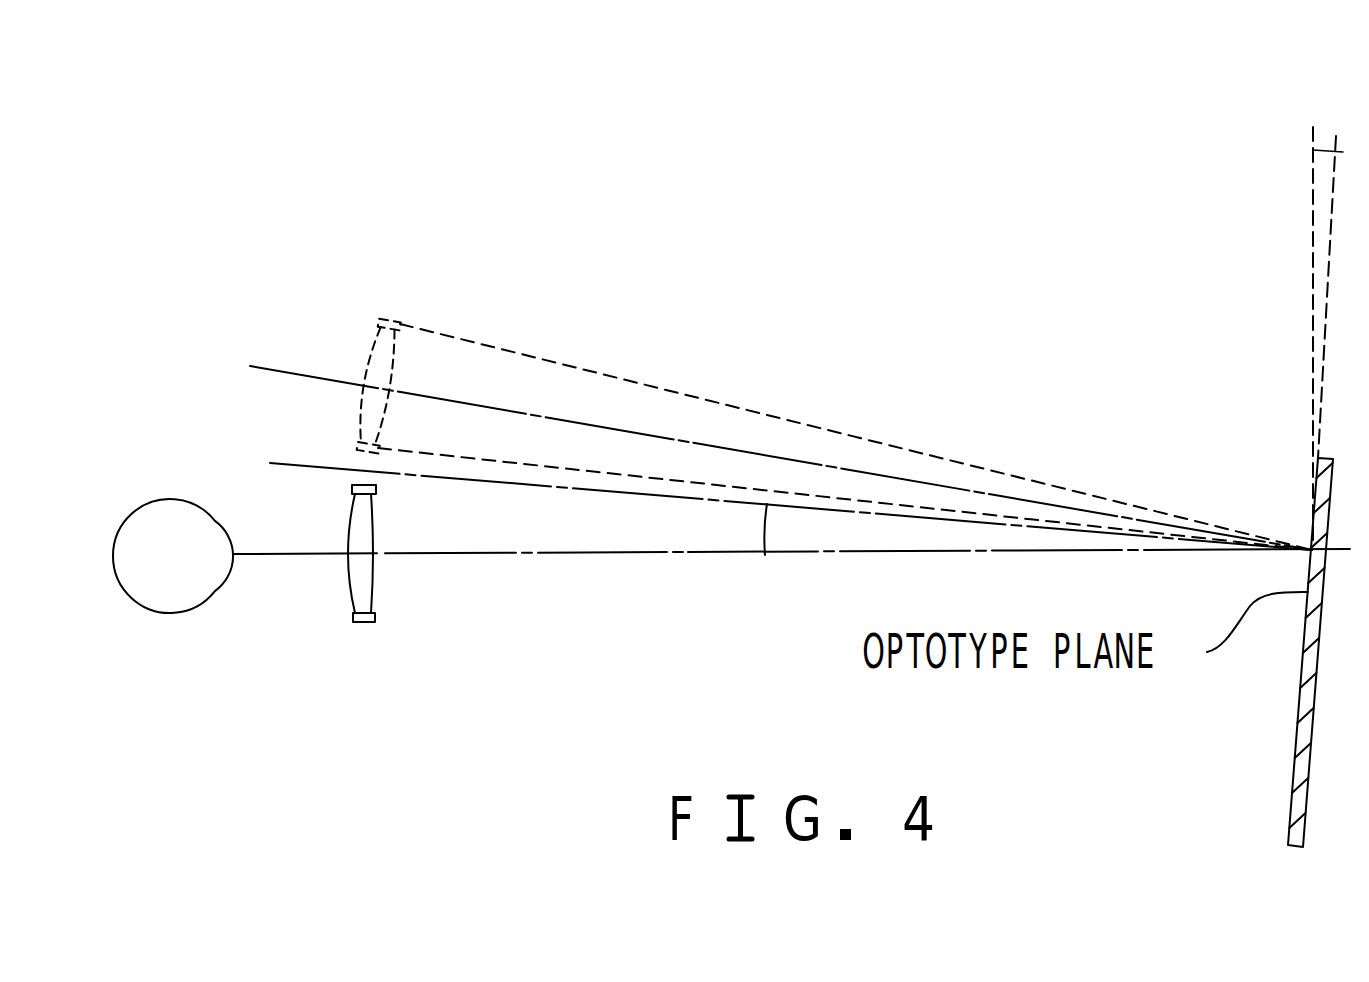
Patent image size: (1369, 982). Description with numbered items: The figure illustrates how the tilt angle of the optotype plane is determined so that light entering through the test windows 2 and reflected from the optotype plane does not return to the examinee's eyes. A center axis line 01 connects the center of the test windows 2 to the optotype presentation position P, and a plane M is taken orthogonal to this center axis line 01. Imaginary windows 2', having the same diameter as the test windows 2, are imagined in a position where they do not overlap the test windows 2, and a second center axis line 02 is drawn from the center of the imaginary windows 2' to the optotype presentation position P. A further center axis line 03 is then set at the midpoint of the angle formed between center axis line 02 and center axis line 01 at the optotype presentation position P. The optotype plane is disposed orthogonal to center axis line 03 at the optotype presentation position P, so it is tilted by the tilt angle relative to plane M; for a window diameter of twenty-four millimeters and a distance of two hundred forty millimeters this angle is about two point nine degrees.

The test windows 2 is at (326, 583).
The imaginary windows 2' is at (351, 348).
The center axis line 01 is at (645, 552).
The center axis line 02 is at (590, 425).
The center axis line 03 is at (497, 482).
The plane M is at (1311, 183).
The optotype presentation position P is at (1311, 548).